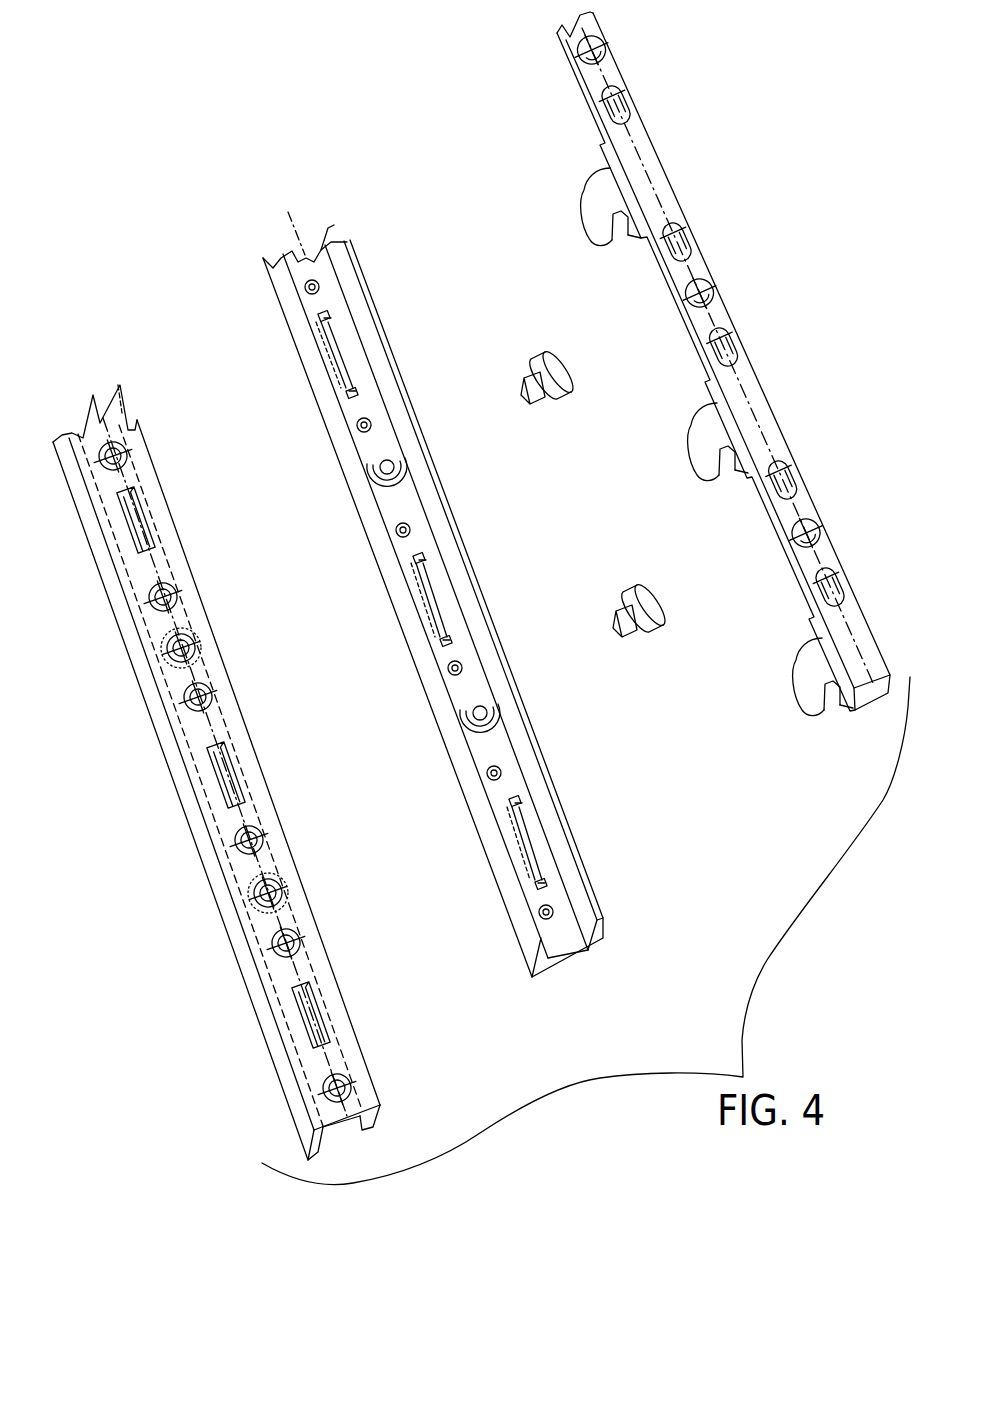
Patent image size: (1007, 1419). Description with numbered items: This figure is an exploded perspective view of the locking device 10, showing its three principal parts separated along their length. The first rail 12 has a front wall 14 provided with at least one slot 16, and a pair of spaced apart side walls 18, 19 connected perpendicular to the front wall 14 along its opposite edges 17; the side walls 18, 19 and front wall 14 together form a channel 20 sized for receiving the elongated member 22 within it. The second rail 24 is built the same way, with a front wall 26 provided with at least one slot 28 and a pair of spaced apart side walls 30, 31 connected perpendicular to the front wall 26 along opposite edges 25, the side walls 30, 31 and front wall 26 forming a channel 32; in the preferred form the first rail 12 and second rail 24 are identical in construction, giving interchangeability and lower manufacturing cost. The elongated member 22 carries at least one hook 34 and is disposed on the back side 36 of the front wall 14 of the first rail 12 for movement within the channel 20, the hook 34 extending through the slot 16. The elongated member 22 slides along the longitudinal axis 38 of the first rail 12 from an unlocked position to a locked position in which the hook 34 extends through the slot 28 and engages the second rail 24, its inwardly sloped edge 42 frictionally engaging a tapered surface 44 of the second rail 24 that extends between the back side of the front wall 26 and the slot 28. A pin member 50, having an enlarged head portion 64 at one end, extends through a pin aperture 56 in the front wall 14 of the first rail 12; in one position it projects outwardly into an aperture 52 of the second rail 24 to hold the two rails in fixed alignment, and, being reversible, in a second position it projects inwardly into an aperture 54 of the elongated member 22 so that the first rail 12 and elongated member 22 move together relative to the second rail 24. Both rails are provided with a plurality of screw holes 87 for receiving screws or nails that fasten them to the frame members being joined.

The device 10 is at (745, 160).
The first rail 12 is at (328, 231).
The front wall 14 is at (297, 253).
The slot 16 is at (337, 355).
The opposite edges 17 is at (340, 287).
The side wall 18 is at (428, 470).
The side wall 19 is at (332, 400).
The channel 20 is at (567, 942).
The elongated member 22 is at (657, 170).
The second rail 24 is at (143, 470).
The opposite edges 25 is at (293, 842).
The front wall 26 is at (163, 567).
The slot 28 is at (138, 527).
The side wall 30 is at (297, 1130).
The side wall 31 is at (373, 1130).
The channel 32 is at (340, 1142).
The hook 34 is at (592, 215).
The back side 36 is at (498, 748).
The longitudinal axis 38 is at (302, 231).
The inwardly sloped edge 42 is at (620, 230).
The tapered surface 44 is at (324, 316).
The pin member 50 is at (533, 372).
The aperture 52 is at (190, 640).
The aperture 54 is at (707, 285).
The pin aperture 56 is at (387, 467).
The enlarged head portion 64 is at (562, 388).
The screw holes 87 is at (123, 442).